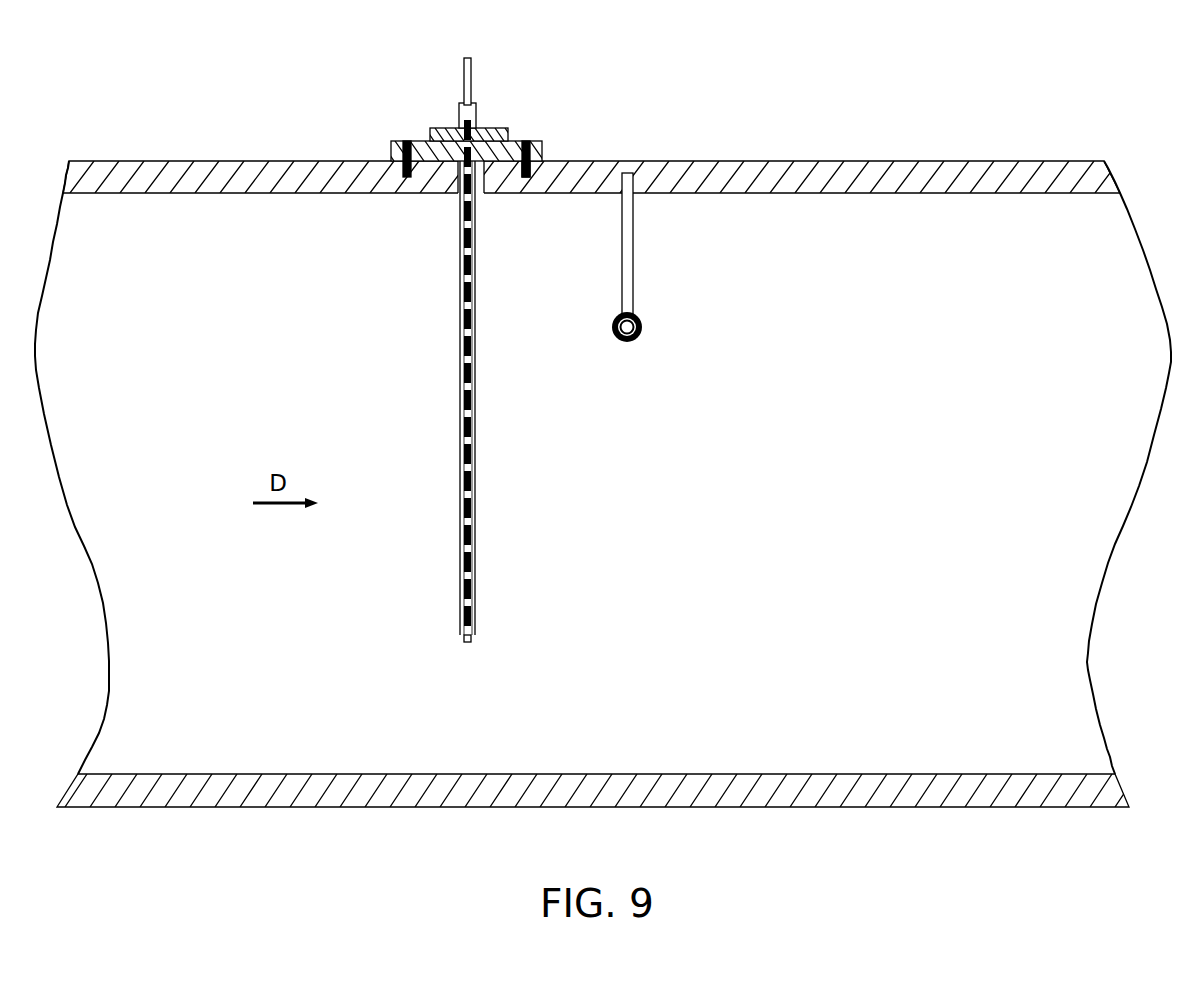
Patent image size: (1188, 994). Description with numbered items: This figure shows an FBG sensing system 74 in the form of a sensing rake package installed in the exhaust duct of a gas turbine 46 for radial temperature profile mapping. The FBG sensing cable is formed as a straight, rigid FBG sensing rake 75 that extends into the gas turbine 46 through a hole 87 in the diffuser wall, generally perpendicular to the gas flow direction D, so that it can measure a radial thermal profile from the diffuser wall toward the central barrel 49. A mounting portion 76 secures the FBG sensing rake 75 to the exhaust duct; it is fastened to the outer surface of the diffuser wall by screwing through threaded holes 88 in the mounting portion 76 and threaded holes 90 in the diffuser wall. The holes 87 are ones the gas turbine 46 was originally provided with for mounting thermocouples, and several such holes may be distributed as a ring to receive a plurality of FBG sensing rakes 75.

The gas turbine 46 is at (967, 160).
The central barrel 49 is at (200, 218).
The FBG sensing system 74 is at (490, 75).
The FBG sensing rake 75 is at (471, 450).
The mounting portion 76 is at (420, 147).
The holes 87 is at (481, 193).
The threaded holes 88 is at (529, 141).
The threaded holes 90 is at (530, 177).